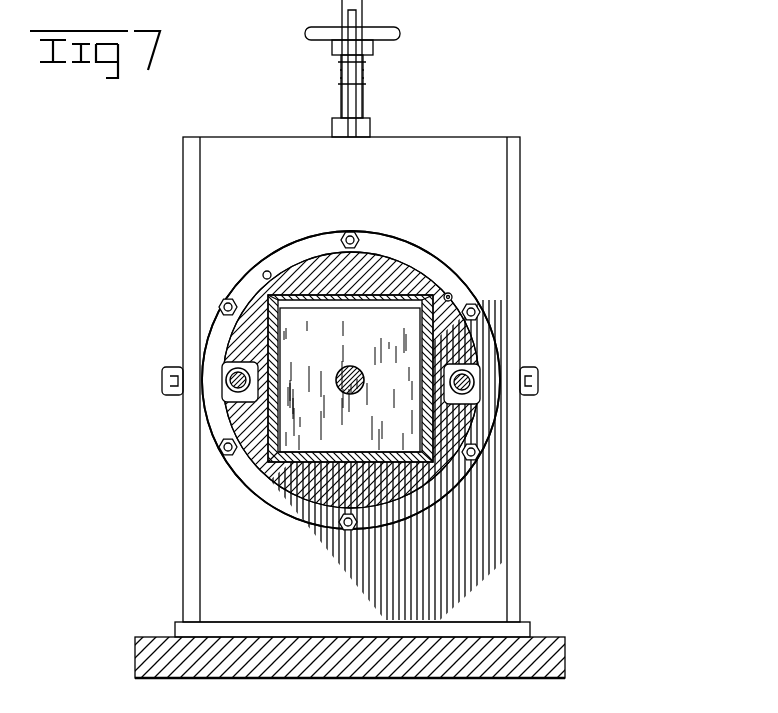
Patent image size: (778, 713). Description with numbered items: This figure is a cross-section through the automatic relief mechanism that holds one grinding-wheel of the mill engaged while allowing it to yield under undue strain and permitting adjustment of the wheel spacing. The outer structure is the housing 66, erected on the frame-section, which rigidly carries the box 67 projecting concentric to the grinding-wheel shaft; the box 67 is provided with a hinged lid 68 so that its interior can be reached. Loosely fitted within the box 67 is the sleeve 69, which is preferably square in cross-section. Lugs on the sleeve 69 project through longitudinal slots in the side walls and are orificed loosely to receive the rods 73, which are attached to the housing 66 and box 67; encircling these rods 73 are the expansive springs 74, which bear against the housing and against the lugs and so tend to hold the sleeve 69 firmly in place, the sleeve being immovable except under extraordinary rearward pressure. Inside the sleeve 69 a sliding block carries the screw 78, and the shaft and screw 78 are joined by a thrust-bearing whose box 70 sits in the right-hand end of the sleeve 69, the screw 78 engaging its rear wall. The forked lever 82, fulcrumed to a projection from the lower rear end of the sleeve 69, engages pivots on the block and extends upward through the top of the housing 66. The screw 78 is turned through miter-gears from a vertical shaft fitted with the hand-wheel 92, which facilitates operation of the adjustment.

The housing 66 is at (532, 513).
The box 67 is at (463, 337).
The hinged lid 68 is at (333, 262).
The sleeve 69 is at (283, 468).
The box of the thrust-bearing 70 is at (350, 378).
The rods 73 is at (470, 388).
The expansive springs 74 is at (472, 377).
The screw 78 is at (366, 377).
The forked lever 82 is at (353, 21).
The hand-wheel 92 is at (400, 33).